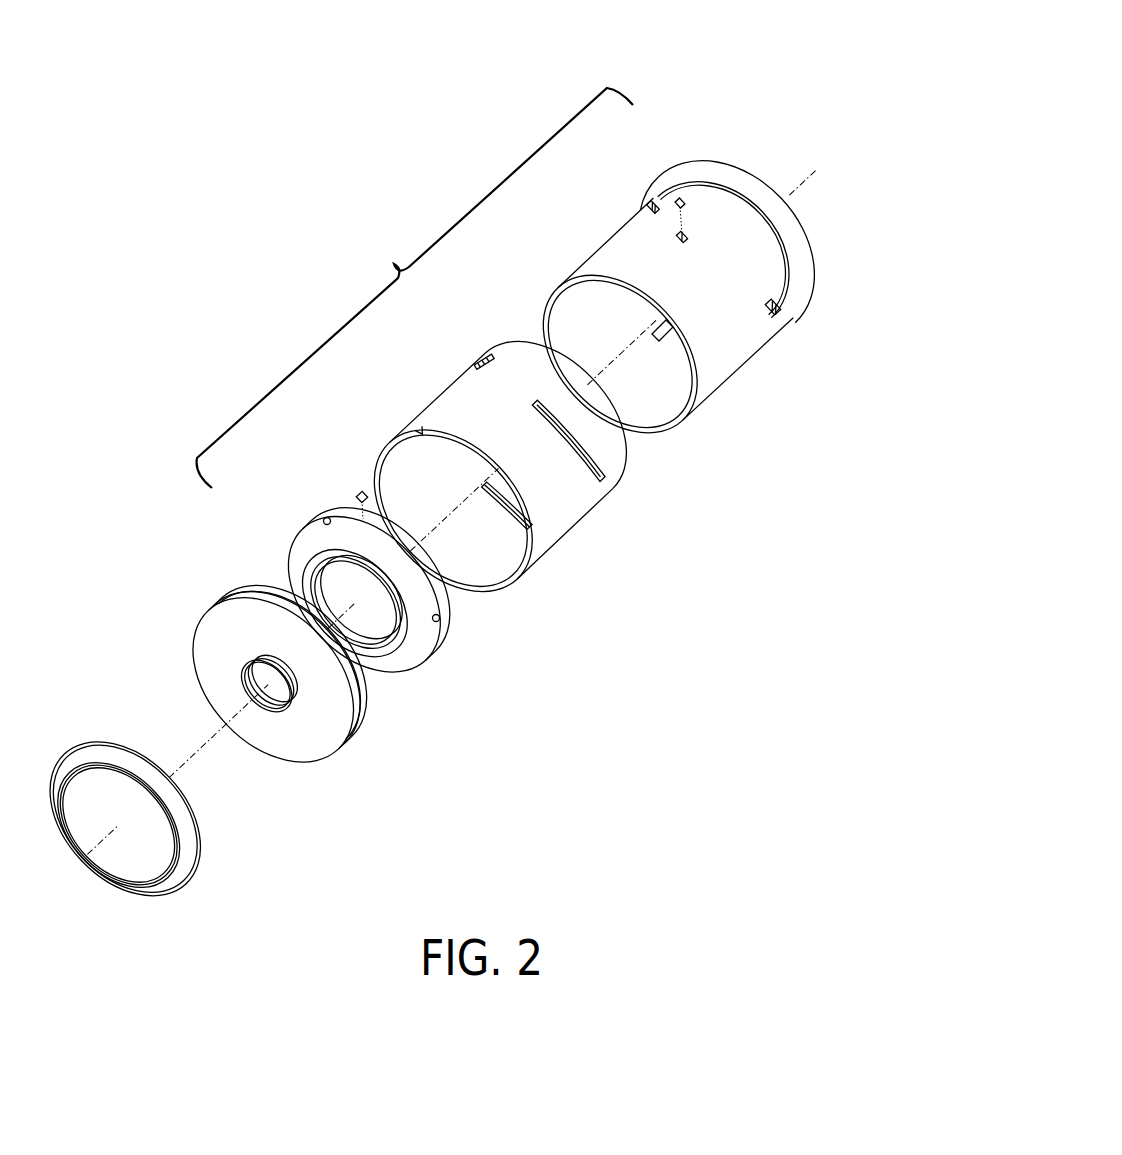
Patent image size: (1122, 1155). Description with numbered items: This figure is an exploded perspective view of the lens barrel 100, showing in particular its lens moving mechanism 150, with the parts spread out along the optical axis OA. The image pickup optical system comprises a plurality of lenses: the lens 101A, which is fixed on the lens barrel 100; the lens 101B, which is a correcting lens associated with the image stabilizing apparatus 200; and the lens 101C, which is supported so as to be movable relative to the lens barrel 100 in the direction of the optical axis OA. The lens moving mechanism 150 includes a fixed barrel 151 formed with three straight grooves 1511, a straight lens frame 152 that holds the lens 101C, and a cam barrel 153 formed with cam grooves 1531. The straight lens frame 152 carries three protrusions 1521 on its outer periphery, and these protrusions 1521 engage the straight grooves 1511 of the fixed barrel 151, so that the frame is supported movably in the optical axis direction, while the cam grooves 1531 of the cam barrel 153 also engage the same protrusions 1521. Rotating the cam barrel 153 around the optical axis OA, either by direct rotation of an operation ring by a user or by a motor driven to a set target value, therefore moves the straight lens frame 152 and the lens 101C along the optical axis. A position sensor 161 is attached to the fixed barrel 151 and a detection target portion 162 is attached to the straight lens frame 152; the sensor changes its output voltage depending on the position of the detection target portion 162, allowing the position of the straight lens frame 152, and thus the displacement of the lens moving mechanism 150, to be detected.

The lens barrel 100 is at (556, 794).
The lens 101A is at (138, 858).
The lens 101B is at (280, 692).
The lens 101C is at (380, 628).
The lens moving mechanism 150 is at (415, 288).
The fixed barrel 151 is at (717, 367).
The straight groove 1511 is at (655, 208).
The straight lens frame 152 is at (428, 650).
The protrusion 1521 is at (327, 522).
The cam barrel 153 is at (575, 508).
The cam groove 1531 is at (477, 368).
The position sensor 161 is at (680, 198).
The detection target portion 162 is at (360, 496).
The image stabilizing apparatus 200 is at (208, 657).
The optical axis OA is at (192, 760).